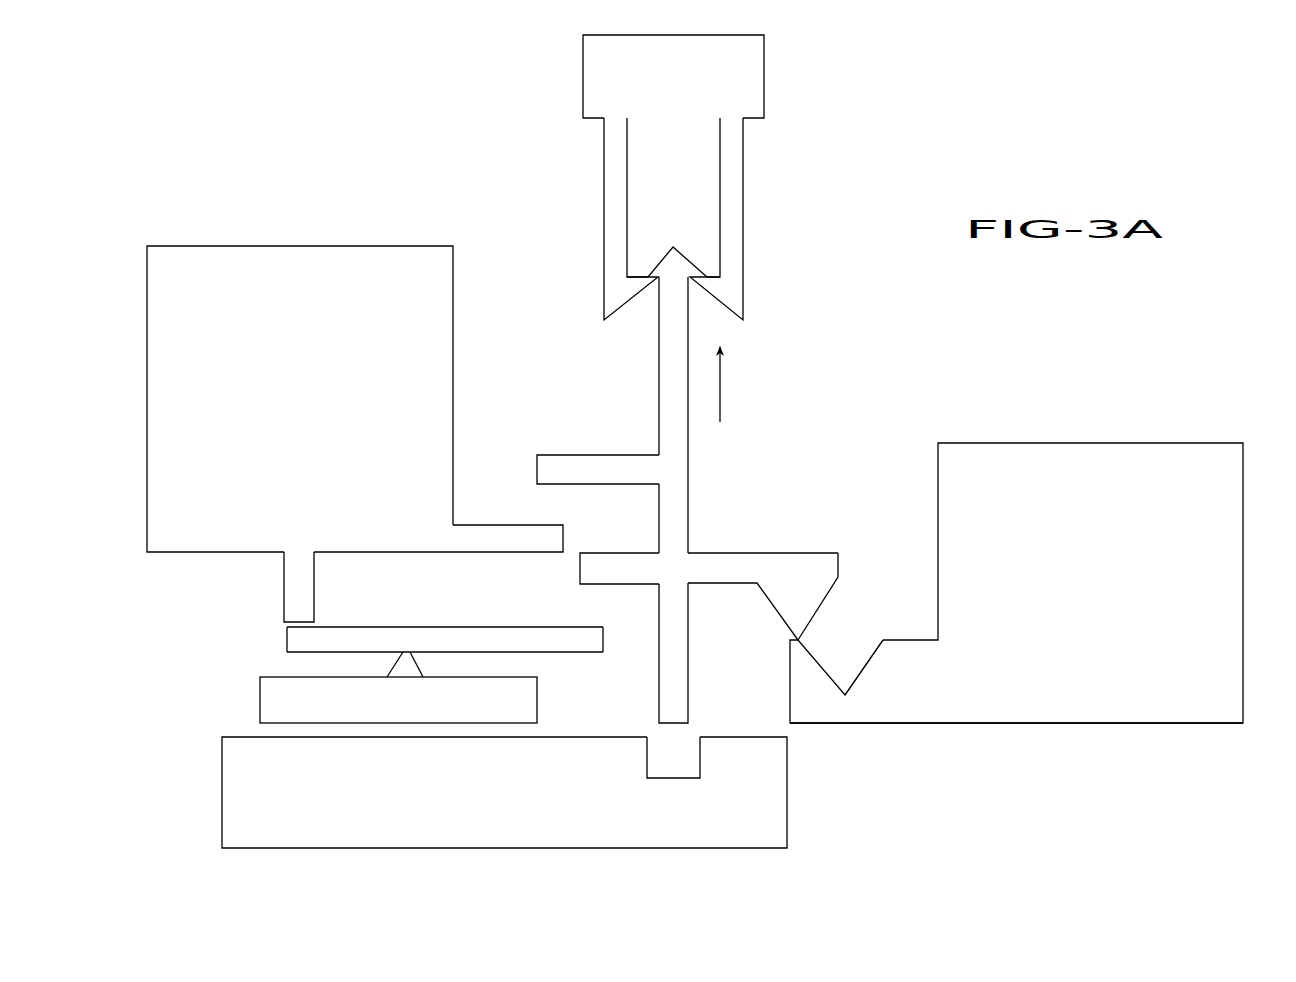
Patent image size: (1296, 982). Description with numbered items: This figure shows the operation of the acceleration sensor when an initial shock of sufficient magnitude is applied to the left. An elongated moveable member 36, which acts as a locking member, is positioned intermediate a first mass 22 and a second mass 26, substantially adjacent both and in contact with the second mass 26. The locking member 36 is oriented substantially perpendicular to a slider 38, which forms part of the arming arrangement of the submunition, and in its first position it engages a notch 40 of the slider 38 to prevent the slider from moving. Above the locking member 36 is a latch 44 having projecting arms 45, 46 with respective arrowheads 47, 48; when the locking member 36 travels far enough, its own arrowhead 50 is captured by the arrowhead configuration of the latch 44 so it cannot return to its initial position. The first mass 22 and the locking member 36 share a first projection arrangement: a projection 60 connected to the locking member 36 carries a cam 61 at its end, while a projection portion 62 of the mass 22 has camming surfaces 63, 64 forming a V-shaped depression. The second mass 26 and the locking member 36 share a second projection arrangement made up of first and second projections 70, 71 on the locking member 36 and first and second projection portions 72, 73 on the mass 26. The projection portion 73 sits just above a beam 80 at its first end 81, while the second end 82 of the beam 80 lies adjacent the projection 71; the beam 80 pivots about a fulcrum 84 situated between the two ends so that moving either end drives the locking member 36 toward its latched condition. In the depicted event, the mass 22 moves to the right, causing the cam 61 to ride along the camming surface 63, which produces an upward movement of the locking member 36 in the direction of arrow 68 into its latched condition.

The latch 44 is at (770, 80).
The projecting arm 45 is at (612, 178).
The projecting arm 46 is at (735, 178).
The arrowhead 47 is at (635, 273).
The arrowhead 48 is at (713, 275).
The arrowhead 50 is at (670, 267).
The second mass 26 is at (299, 242).
The second projection portion 73 is at (292, 607).
The first projection portion 72 is at (515, 538).
The elongated moveable member 36 is at (692, 507).
The first projection 70 is at (565, 463).
The second projection 71 is at (587, 570).
The projection 60 is at (723, 583).
The cam 61 is at (840, 563).
The arrow 68 is at (720, 397).
The beam 80 is at (455, 640).
The first end 81 is at (303, 637).
The second end 82 is at (570, 642).
The fulcrum 84 is at (410, 673).
The slider 38 is at (448, 825).
The notch 40 is at (675, 778).
The first mass 22 is at (1247, 568).
The projection portion 62 is at (870, 715).
The camming surface 63 is at (827, 665).
The camming surface 64 is at (863, 667).